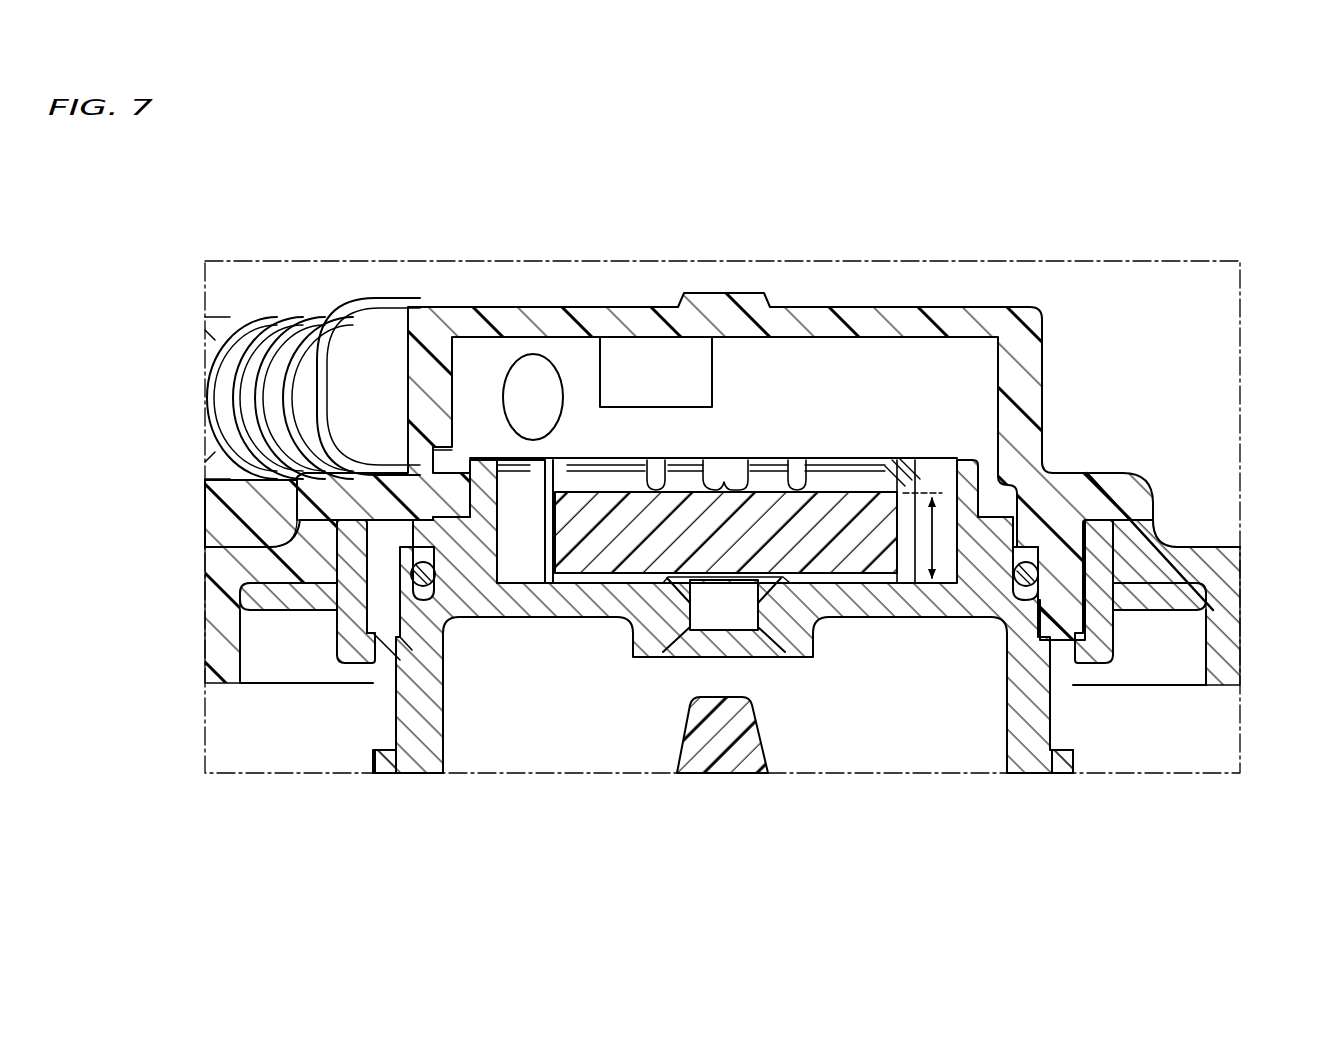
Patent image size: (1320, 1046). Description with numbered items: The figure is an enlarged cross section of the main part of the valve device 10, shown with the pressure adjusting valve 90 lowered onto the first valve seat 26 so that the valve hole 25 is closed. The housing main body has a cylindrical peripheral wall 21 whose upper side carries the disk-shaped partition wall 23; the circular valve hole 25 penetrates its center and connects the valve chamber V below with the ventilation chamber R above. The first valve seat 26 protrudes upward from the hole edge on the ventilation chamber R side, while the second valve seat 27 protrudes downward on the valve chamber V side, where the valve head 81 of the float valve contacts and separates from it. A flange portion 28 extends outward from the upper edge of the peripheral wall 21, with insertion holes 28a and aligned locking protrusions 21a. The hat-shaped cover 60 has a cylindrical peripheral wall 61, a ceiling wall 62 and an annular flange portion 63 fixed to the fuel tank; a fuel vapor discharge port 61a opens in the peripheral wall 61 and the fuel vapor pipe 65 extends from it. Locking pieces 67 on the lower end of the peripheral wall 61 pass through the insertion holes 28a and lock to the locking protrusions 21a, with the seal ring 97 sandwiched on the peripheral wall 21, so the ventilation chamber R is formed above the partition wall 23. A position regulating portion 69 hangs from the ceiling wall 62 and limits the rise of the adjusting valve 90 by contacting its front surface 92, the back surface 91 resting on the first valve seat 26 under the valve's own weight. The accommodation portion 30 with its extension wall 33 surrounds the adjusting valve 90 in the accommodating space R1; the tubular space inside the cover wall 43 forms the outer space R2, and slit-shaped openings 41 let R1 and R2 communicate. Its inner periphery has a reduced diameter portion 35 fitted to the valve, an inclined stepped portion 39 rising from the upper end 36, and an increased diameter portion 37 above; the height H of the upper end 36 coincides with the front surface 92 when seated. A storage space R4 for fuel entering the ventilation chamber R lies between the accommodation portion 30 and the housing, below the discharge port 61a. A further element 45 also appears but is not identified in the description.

The valve device 10 is at (703, 288).
The peripheral wall 21 is at (430, 740).
The locking protrusion 21a is at (358, 735).
The partition wall 23 is at (566, 600).
The valve hole 25 is at (713, 613).
The first valve seat 26 is at (677, 580).
The second valve seat 27 is at (800, 612).
The flange portion 28 is at (1165, 597).
The insertion hole 28a is at (330, 655).
The accommodation portion 30 is at (958, 452).
The extension wall 33 is at (500, 452).
The reduced diameter portion 35 is at (458, 580).
The upper end 36 is at (905, 482).
The increased diameter portion 37 is at (913, 470).
The stepped portion 39 is at (937, 470).
The opening 41 is at (735, 470).
The cover wall 43 is at (445, 340).
The seal member 45 is at (567, 470).
The cover 60 is at (1034, 304).
The peripheral wall 61 is at (1042, 345).
The fuel vapor discharge port 61a is at (534, 372).
The ceiling wall 62 is at (935, 307).
The flange portion 63 is at (1220, 590).
The fuel vapor pipe 65 is at (333, 318).
The locking piece 67 is at (1056, 760).
The position regulating portion 69 is at (712, 370).
The valve head 81 is at (770, 740).
The pressure adjusting valve 90 is at (760, 495).
The back surface 91 is at (832, 572).
The front surface 92 is at (820, 490).
The seal ring 97 is at (1037, 566).
The ventilation chamber R is at (868, 348).
The accommodating space R1 is at (613, 580).
The outer space R2 is at (516, 580).
The storage space R4 is at (445, 498).
The height H is at (932, 585).
The valve chamber V is at (914, 730).